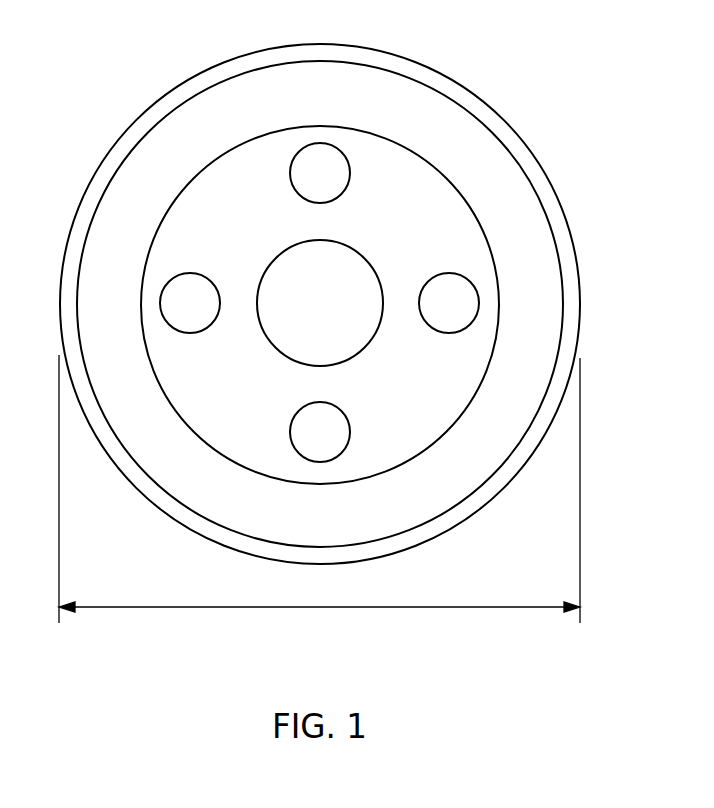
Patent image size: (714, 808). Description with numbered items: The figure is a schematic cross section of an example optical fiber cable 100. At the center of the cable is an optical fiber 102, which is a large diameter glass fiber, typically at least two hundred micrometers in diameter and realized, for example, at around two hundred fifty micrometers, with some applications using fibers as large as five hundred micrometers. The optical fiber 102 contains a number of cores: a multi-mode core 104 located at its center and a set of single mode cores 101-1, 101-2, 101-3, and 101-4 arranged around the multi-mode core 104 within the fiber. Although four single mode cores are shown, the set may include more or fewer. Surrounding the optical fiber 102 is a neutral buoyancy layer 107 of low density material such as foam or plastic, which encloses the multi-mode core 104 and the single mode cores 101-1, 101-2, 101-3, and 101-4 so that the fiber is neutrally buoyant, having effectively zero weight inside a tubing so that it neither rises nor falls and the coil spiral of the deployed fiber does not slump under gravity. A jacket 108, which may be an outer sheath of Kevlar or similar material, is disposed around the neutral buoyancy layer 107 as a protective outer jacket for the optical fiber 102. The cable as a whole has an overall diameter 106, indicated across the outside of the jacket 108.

The optical fiber cable 100 is at (125, 41).
The optical fiber 102 is at (460, 183).
The multi-mode core 104 is at (345, 358).
The overall diameter 106 is at (320, 607).
The neutral buoyancy layer 107 is at (452, 95).
The jacket 108 is at (320, 44).
The single mode core 101-1 is at (479, 303).
The single mode core 101-2 is at (304, 409).
The single mode core 101-3 is at (160, 303).
The single mode core 101-4 is at (337, 197).